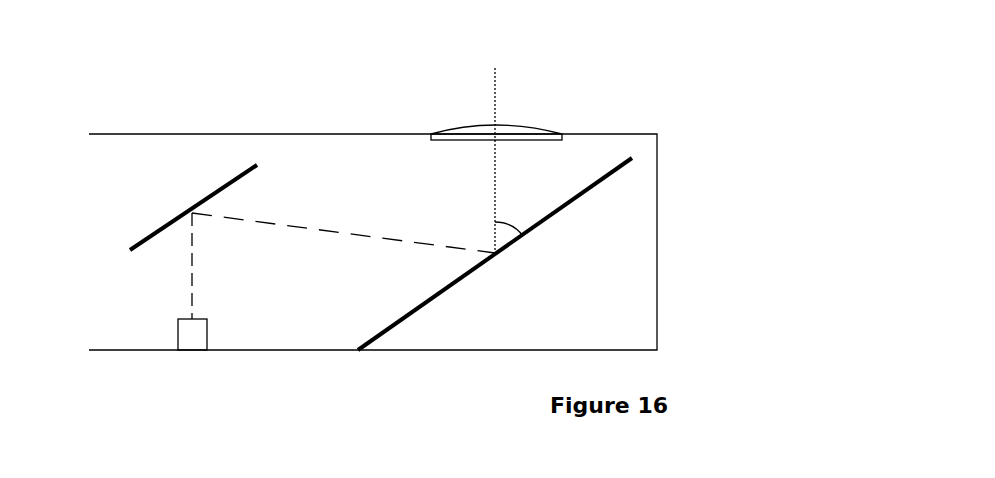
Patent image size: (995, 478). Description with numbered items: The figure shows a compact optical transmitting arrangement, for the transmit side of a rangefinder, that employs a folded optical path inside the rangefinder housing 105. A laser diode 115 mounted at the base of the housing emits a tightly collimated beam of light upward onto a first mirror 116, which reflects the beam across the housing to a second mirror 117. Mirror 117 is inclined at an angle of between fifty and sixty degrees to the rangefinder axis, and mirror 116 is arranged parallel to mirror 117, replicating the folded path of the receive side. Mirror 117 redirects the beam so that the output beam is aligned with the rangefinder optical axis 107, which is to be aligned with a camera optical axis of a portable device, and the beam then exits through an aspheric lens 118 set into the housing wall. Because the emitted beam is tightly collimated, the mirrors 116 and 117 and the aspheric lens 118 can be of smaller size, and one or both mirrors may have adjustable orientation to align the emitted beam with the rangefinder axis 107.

The rangefinder housing 105 is at (209, 133).
The rangefinder optical axis 107 is at (495, 95).
The laser diode 115 is at (185, 352).
The mirror 116 is at (208, 197).
The mirror 117 is at (550, 220).
The aspheric lens 118 is at (532, 128).